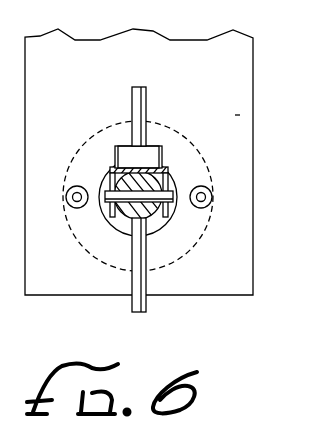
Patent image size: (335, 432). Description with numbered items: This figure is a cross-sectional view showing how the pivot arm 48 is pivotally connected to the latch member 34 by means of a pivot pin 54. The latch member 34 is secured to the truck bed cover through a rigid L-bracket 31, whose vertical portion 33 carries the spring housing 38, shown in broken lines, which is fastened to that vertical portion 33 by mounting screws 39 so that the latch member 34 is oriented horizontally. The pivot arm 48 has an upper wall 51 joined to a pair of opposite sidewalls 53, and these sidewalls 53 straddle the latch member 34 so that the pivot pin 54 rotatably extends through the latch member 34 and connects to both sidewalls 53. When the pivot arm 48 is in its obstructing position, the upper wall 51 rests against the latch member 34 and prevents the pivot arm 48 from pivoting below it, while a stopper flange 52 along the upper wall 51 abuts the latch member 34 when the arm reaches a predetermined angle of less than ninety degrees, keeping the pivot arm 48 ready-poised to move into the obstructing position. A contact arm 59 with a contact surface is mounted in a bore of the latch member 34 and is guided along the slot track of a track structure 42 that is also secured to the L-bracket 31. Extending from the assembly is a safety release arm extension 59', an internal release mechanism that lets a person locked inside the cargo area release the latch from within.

The L-bracket 31 is at (245, 79).
The vertical portion 33 is at (237, 115).
The latch member 34 is at (148, 215).
The spring housing 38 is at (108, 266).
The mounting screws 39 is at (213, 193).
The track structure 42 is at (112, 231).
The pivot arm 48 is at (159, 136).
The upper wall 51 is at (127, 202).
The stopper flange 52 is at (123, 145).
The opposite sidewalls 53 is at (110, 180).
The pivot pin 54 is at (173, 201).
The contact arm 59 is at (117, 98).
The safety release arm extension 59' is at (175, 276).